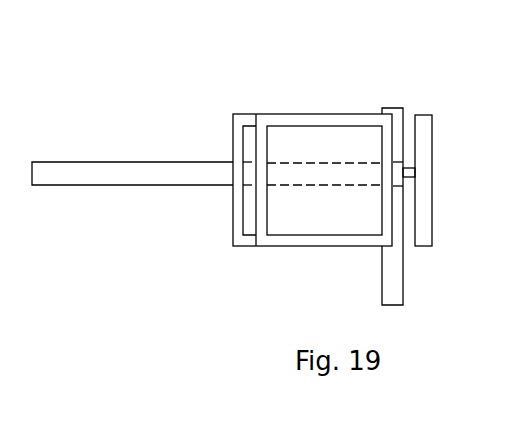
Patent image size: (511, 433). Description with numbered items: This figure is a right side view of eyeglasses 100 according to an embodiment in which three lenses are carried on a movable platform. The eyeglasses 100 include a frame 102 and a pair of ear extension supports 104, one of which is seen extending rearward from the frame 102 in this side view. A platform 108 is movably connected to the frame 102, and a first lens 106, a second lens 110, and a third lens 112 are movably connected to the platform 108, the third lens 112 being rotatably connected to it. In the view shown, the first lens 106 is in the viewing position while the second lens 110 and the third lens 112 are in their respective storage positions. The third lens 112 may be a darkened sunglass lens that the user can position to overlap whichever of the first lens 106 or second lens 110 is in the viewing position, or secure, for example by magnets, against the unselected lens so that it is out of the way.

The eyeglasses 100 is at (436, 84).
The frame 102 is at (392, 108).
The ear extension supports 104 is at (78, 162).
The first lens 106 is at (432, 137).
The platform 108 is at (380, 248).
The second lens 110 is at (235, 113).
The third lens 112 is at (327, 113).